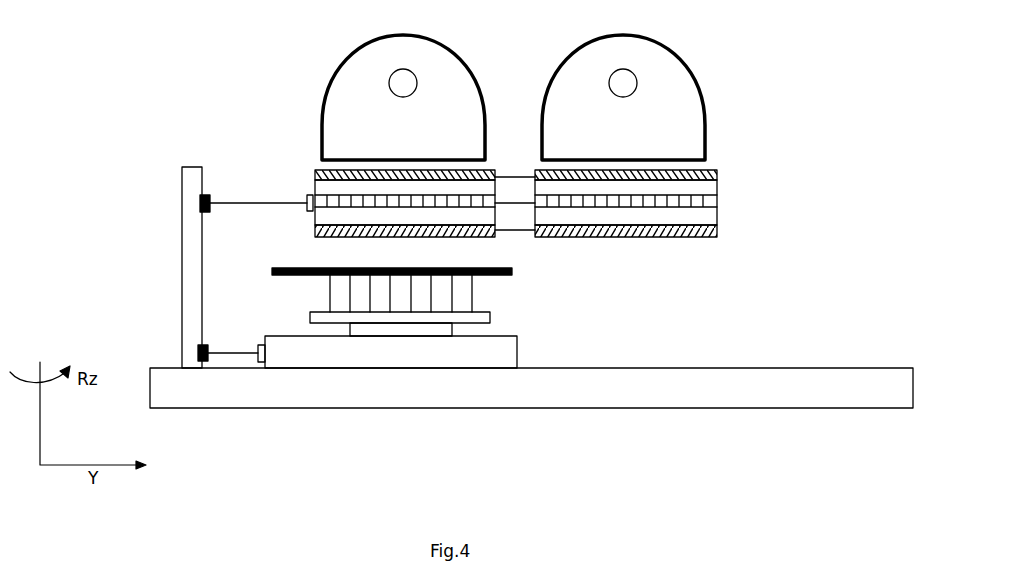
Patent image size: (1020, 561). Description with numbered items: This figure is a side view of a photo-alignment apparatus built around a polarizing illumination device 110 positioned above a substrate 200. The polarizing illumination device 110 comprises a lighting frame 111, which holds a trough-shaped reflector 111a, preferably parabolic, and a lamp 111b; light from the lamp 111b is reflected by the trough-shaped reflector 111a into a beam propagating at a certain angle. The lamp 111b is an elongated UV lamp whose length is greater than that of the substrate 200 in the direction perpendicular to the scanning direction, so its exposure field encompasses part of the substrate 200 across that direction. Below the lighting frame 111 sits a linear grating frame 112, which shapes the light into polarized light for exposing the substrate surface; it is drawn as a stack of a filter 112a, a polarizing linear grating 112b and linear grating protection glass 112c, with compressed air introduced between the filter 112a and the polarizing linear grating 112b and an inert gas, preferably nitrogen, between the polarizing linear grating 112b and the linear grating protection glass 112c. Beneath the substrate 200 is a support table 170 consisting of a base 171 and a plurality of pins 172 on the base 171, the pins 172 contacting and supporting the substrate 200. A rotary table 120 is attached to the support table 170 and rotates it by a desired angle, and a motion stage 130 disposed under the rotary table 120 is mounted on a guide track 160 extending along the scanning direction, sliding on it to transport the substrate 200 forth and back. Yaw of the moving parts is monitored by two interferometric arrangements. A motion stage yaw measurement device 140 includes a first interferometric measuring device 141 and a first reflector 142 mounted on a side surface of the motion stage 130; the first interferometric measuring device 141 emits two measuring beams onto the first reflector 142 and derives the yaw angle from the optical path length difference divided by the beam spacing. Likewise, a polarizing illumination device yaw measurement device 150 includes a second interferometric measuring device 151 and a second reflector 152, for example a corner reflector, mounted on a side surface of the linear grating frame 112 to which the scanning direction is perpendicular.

The polarizing illumination device 110 is at (602, 136).
The lighting frame 111 is at (577, 97).
The trough-shaped reflector 111a is at (623, 83).
The lamp 111b is at (700, 108).
The linear grating frame 112 is at (578, 195).
The filter 112a is at (718, 174).
The polarizing linear grating 112b is at (718, 200).
The linear grating protection glass 112c is at (718, 232).
The rotary table 120 is at (455, 333).
The motion stage 130 is at (515, 360).
The motion stage yaw measurement device 140 is at (238, 409).
The first interferometric measuring device 141 is at (203, 361).
The first reflector 142 is at (261, 362).
The polarizing illumination device yaw measurement device 150 is at (251, 147).
The second interferometric measuring device 151 is at (208, 195).
The second reflector 152 is at (308, 195).
The guide track 160 is at (782, 380).
The support table 170 is at (468, 292).
The base 171 is at (487, 318).
The pins 172 is at (472, 290).
The substrate 200 is at (272, 270).